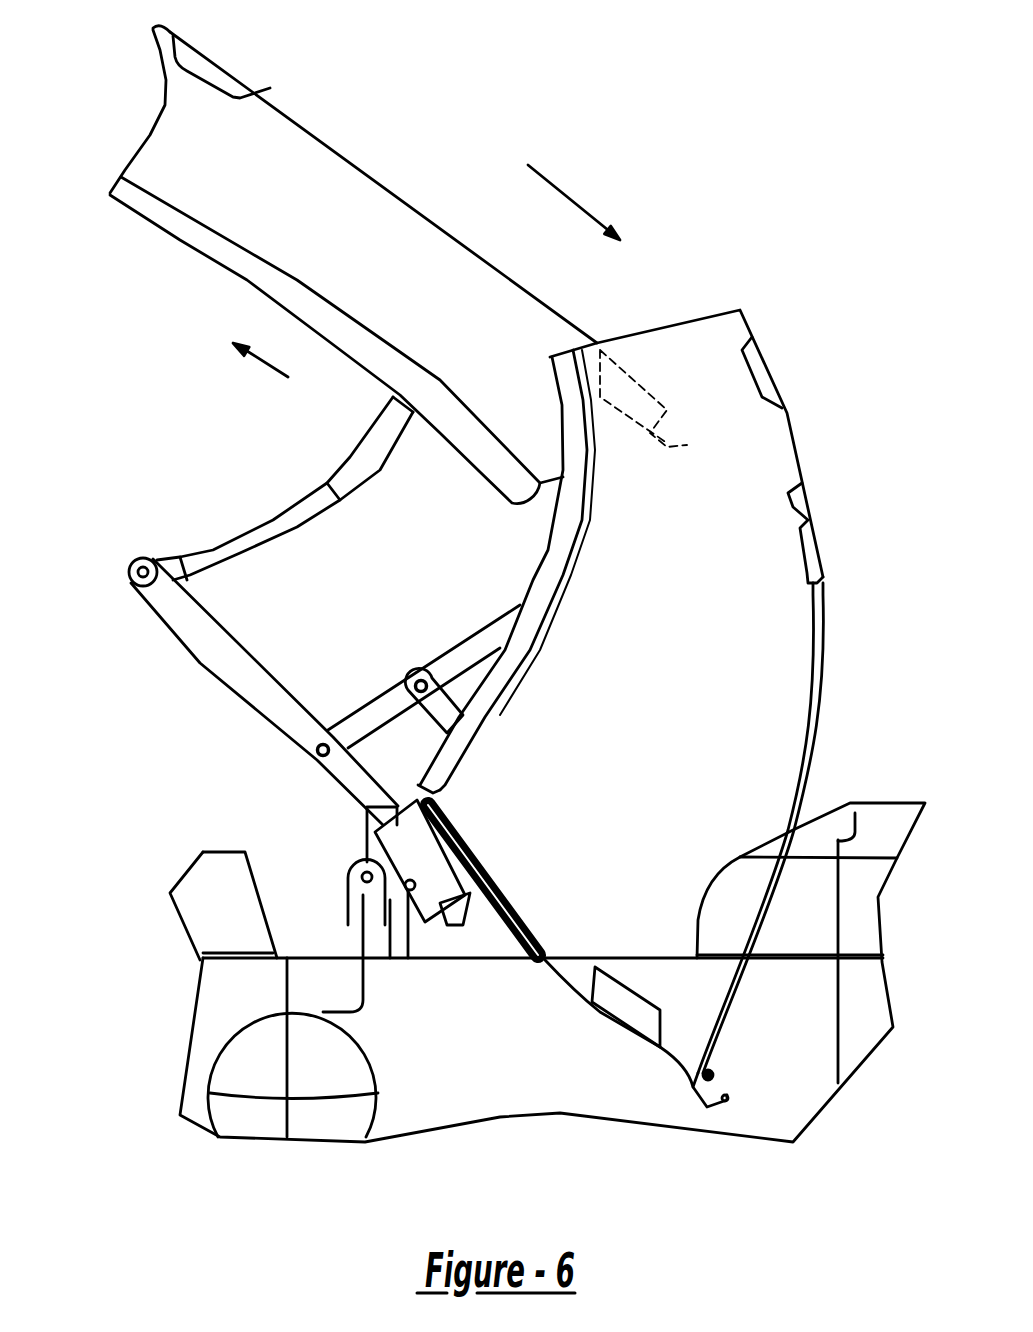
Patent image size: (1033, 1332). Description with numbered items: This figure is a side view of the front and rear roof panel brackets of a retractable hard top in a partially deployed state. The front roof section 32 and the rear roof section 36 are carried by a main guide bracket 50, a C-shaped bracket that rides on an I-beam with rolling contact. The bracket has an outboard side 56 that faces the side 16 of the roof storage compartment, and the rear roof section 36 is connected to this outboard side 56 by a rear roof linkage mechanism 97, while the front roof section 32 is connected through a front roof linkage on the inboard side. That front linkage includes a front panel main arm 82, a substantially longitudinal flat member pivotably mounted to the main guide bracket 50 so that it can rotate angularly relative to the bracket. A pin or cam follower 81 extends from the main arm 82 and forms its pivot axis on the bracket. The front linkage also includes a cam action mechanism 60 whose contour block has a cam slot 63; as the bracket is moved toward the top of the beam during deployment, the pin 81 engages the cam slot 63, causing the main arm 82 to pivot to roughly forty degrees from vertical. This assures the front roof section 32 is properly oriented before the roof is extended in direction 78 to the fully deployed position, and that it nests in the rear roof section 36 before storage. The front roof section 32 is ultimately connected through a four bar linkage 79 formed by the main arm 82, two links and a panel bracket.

The side of storage compartment 16 is at (587, 1080).
The front roof section 32 is at (370, 153).
The rear roof section 36 is at (808, 487).
The main guide bracket 50 is at (287, 788).
The outboard side 56 is at (460, 900).
The cam action mechanism 60 is at (333, 898).
The cam slot 63 is at (362, 920).
The direction of extension 78 is at (557, 178).
The four bar linkage 79 is at (245, 348).
The pin or cam follower 81 is at (367, 882).
The front panel main arm 82 is at (203, 667).
The rear roof linkage mechanism 97 is at (340, 862).